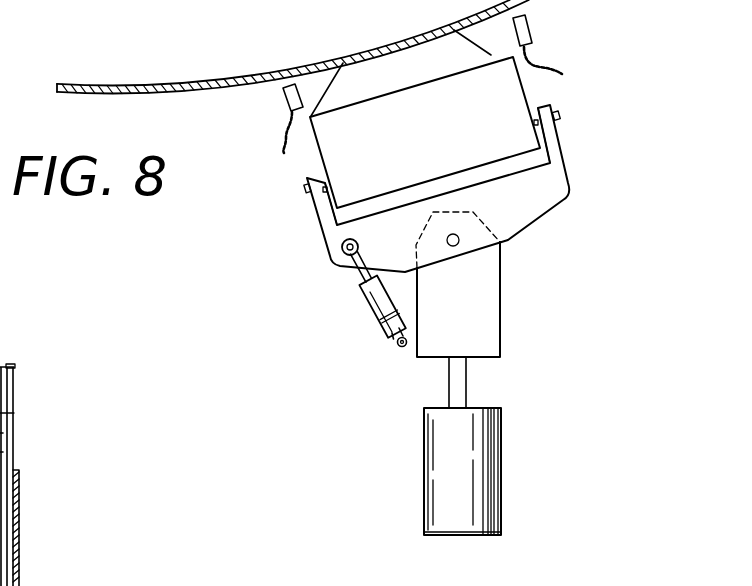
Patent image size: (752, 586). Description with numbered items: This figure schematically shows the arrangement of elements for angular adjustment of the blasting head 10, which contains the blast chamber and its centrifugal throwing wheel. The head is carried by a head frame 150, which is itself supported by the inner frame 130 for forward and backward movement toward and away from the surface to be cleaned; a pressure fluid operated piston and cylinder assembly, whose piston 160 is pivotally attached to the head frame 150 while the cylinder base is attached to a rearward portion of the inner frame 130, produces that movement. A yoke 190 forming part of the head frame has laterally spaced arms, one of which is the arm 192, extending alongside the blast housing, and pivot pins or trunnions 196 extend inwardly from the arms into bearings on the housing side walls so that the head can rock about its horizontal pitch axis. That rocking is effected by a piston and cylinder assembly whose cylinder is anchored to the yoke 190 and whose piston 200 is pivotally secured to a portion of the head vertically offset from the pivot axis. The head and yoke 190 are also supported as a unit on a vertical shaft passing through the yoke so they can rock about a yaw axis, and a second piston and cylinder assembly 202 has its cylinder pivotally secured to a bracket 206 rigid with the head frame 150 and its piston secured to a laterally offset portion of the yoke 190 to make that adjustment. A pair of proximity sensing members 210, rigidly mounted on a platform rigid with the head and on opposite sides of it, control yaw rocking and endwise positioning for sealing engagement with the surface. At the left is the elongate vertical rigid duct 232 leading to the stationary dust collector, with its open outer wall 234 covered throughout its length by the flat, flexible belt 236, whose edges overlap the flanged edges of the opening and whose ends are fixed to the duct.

The blasting head 10 is at (445, 116).
The inner frame 130 is at (501, 471).
The head frame 150 is at (500, 309).
The piston 160 is at (467, 378).
The yoke 190 is at (548, 201).
The arm 192 is at (565, 143).
The pivot pins or trunnions 196 is at (303, 189).
The piston 200 is at (358, 268).
The piston and cylinder assembly 202 is at (378, 306).
The bracket 206 is at (341, 247).
The proximity sensing members 210 is at (281, 93).
The duct 232 is at (18, 392).
The open outer wall 234 is at (14, 413).
The belt 236 is at (19, 500).